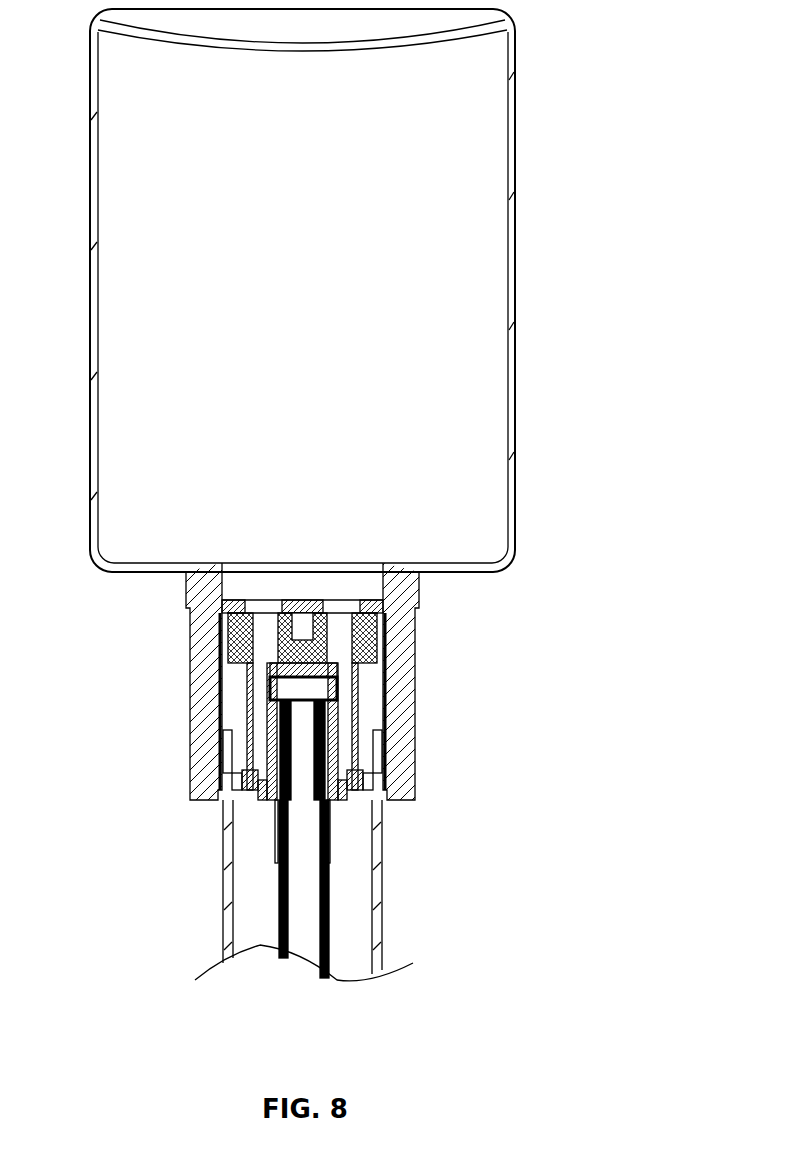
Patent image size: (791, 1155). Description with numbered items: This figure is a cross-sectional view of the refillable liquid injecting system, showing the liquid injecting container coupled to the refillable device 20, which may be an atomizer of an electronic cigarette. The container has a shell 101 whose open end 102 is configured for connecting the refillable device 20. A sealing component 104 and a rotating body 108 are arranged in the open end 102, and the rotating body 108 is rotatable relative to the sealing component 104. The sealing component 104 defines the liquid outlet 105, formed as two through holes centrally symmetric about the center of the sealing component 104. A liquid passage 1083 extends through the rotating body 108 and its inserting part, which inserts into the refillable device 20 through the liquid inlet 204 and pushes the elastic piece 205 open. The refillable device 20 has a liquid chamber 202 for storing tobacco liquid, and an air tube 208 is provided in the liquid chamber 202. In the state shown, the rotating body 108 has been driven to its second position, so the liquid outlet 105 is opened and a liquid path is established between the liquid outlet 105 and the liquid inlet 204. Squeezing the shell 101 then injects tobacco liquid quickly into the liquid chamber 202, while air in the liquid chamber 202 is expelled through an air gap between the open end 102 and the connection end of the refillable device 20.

The shell 101 is at (516, 284).
The open end 102 is at (403, 731).
The sealing component 104 is at (362, 640).
The liquid outlet 105 is at (267, 642).
The rotating body 108 is at (235, 685).
The liquid passage 1083 is at (258, 738).
The liquid inlet 204 is at (375, 786).
The elastic piece 205 is at (272, 799).
The air tube 208 is at (331, 840).
The refillable device 20 is at (381, 893).
The liquid chamber 202 is at (252, 907).